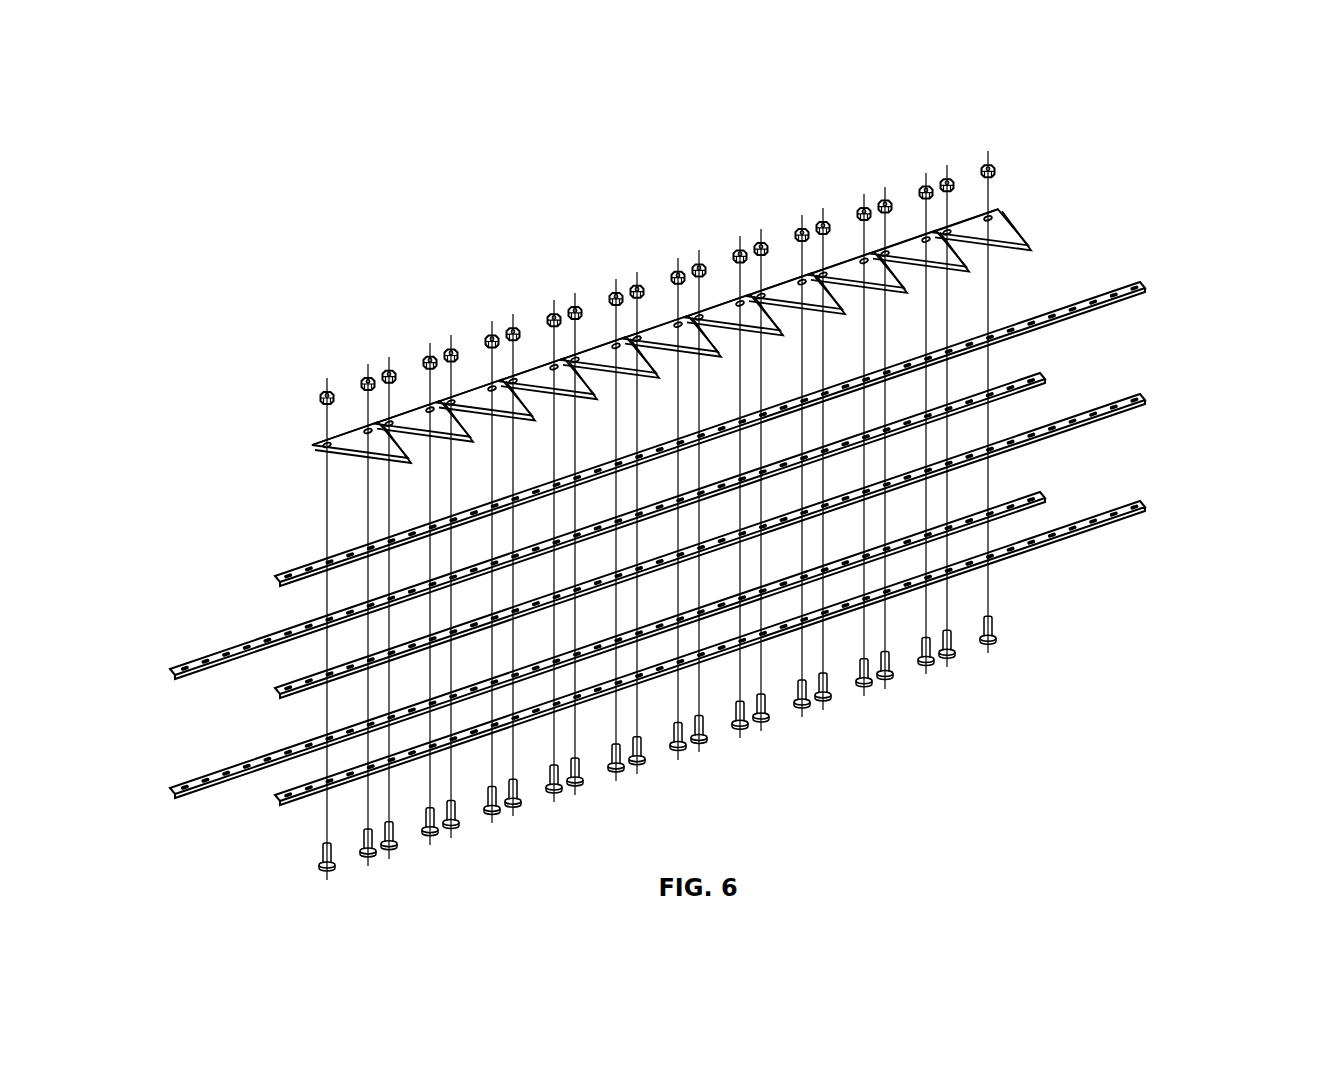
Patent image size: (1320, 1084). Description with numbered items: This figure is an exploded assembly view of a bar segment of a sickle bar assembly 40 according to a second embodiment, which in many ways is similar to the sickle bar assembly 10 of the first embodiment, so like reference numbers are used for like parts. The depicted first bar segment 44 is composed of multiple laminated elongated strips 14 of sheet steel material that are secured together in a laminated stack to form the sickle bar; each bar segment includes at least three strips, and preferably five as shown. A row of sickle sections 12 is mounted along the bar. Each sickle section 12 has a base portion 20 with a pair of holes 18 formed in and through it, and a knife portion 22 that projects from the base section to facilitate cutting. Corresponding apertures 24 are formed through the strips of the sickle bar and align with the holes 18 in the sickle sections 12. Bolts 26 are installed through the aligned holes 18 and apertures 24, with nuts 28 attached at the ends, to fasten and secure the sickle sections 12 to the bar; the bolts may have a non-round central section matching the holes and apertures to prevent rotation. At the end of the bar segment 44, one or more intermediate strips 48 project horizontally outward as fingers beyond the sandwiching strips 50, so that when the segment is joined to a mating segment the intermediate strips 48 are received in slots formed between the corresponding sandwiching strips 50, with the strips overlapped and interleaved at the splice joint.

The sickle bar assembly 10 is at (1154, 811).
The sickle section 12 is at (422, 407).
The elongated strip 14 is at (672, 543).
The hole 18 is at (453, 400).
The base portion 20 is at (358, 442).
The knife portion 22 is at (352, 462).
The aperture 24 is at (368, 546).
The bolt 26 is at (708, 741).
The nut 28 is at (643, 284).
The sickle bar assembly 40 is at (286, 356).
The first bar segment 44 is at (756, 532).
The intermediate strip 48 is at (184, 674).
The sandwiching strip 50 is at (1165, 517).